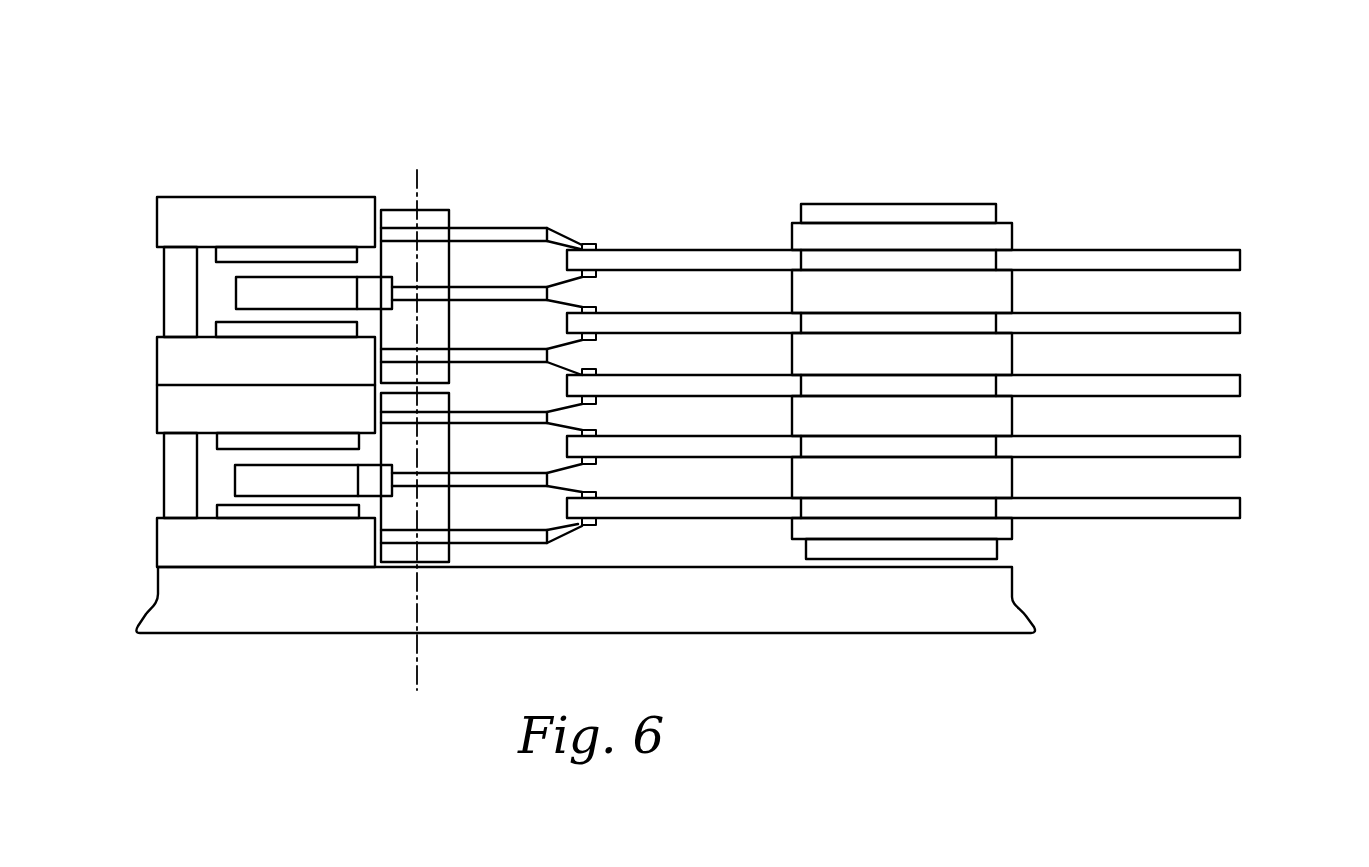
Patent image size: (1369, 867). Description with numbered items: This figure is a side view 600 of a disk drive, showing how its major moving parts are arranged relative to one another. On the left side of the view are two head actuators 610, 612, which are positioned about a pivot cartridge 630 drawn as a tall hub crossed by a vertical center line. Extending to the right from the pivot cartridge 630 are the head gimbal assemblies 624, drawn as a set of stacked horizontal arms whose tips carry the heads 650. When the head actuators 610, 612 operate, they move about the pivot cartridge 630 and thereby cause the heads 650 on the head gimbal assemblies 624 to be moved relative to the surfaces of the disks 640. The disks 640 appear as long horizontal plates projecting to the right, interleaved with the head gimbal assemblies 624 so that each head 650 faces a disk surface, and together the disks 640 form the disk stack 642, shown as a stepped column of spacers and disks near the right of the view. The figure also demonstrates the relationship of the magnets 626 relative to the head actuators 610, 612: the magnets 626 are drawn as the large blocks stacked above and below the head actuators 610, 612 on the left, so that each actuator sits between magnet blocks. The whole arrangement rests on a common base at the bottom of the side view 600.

The side view 600 is at (522, 108).
The head actuator 610 is at (236, 290).
The head actuator 612 is at (235, 472).
The head gimbal assemblies 624 is at (563, 240).
The magnets 626 is at (184, 208).
The pivot cartridge 630 is at (400, 210).
The disks 640 is at (1245, 250).
The disk stack 642 is at (1010, 213).
The heads 650 is at (598, 245).